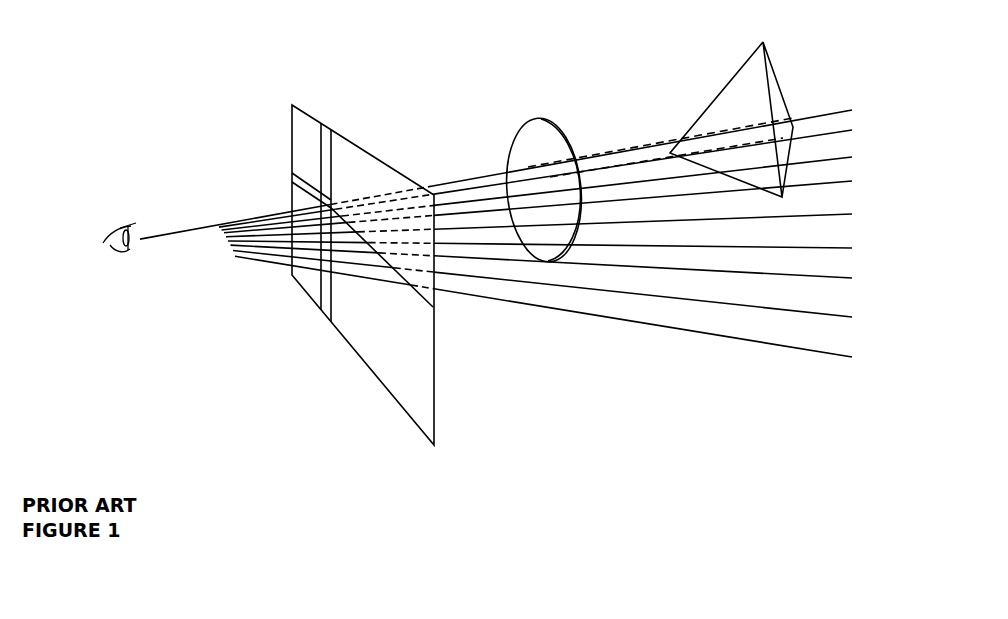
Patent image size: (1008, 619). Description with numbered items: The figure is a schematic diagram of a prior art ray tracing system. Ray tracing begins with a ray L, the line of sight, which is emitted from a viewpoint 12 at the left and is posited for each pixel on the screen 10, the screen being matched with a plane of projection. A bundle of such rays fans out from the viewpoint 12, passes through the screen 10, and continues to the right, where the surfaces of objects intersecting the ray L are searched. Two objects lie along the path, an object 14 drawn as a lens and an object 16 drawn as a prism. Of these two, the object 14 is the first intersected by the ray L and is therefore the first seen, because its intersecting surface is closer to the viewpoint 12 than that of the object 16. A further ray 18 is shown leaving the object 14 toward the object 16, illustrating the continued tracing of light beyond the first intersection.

The screen 10 is at (435, 385).
The viewpoint 12 is at (137, 278).
The object 14 is at (556, 120).
The object 16 is at (723, 88).
The light ray from pixel 18 is at (530, 165).
The ray (line of sight) L is at (196, 224).